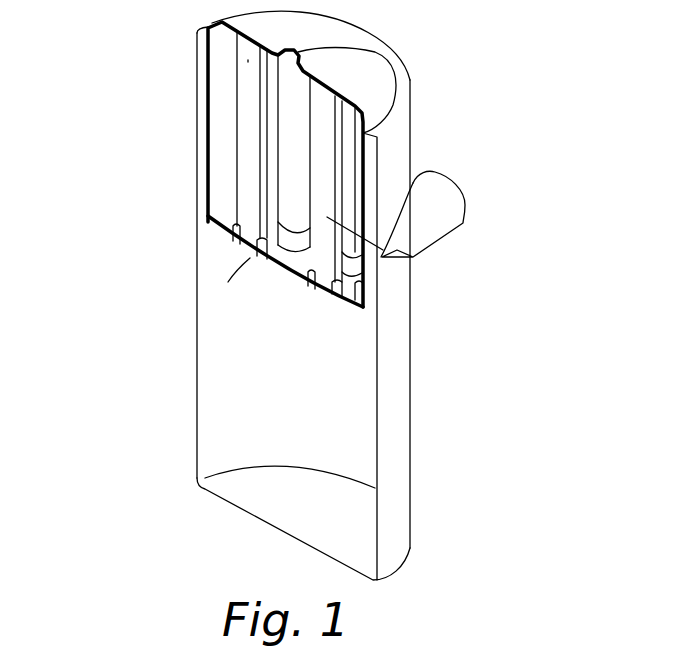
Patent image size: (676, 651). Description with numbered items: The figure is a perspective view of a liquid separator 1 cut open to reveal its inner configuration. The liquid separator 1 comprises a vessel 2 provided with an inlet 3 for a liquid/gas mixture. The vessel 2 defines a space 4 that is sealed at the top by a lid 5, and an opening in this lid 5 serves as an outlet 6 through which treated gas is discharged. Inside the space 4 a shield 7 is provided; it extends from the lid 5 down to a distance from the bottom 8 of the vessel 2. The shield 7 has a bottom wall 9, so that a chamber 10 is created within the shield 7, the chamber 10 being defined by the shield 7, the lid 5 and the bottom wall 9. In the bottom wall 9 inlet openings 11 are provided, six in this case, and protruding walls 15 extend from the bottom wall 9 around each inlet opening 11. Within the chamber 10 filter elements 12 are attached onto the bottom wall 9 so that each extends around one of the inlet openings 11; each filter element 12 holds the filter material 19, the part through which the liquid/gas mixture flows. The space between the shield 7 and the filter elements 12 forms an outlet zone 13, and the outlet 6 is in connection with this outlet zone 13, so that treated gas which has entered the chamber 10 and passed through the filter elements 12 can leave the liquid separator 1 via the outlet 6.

The liquid separator 1 is at (100, 86).
The vessel 2 is at (197, 152).
The inlet 3 is at (443, 195).
The space 4 is at (310, 419).
The lid 5 is at (212, 23).
The outlet 6 is at (385, 53).
The shield 7 is at (208, 173).
The bottom 8 is at (270, 522).
The bottom wall 9 is at (233, 232).
The chamber 10 is at (377, 283).
The inlet opening 11 is at (258, 253).
The filter element 12 is at (295, 90).
The outlet zone 13 is at (357, 175).
The protruding wall 15 is at (258, 258).
The filter material 19 is at (248, 127).